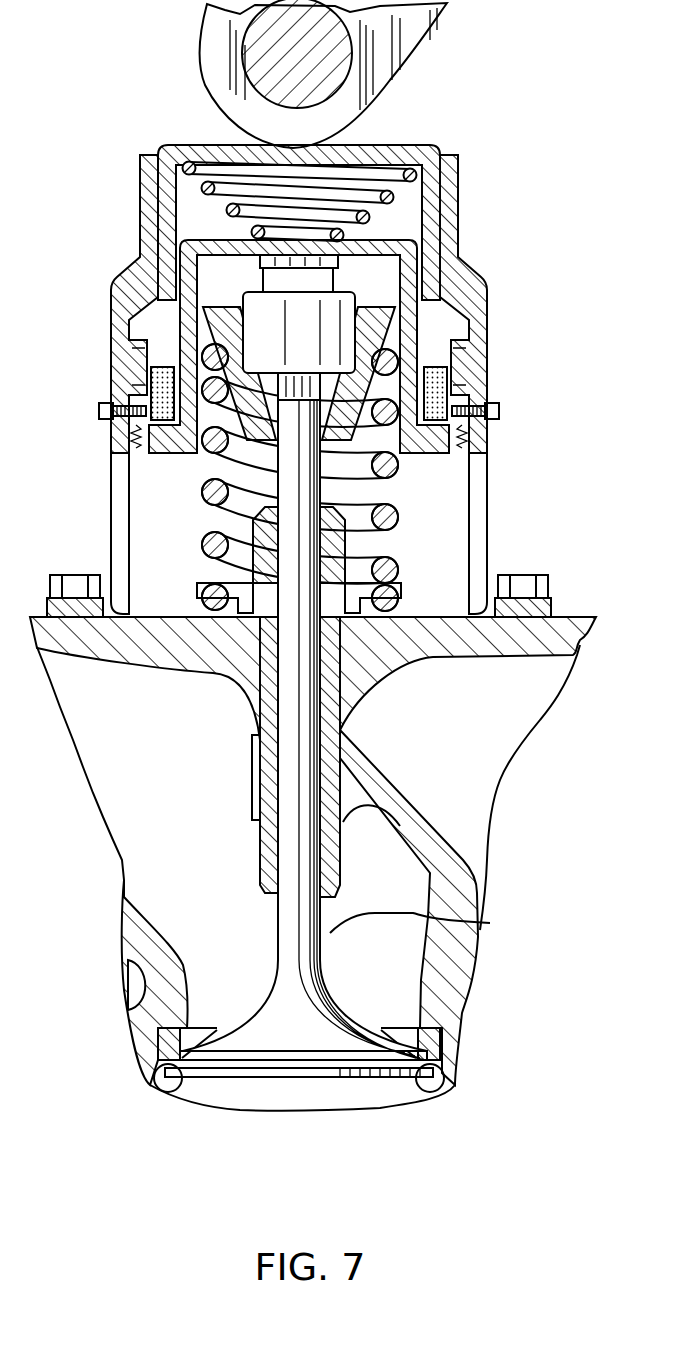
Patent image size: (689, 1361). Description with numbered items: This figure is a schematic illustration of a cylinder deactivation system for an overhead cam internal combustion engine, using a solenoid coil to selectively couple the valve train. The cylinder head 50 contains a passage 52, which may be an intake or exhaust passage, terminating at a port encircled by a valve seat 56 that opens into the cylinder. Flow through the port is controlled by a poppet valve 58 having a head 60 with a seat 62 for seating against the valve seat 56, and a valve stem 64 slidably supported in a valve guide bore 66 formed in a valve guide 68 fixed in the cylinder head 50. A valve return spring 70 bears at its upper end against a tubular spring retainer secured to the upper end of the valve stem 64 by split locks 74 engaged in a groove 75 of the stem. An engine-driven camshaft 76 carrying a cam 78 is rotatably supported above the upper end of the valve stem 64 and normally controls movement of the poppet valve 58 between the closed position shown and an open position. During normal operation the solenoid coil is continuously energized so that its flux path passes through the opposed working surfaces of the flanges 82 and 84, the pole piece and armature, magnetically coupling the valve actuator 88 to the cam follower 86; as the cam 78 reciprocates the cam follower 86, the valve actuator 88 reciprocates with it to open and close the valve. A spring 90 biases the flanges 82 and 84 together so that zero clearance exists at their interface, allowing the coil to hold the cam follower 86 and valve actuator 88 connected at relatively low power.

The cylinder head 50 is at (104, 404).
The passage 52 is at (167, 852).
The valve seat 56 is at (172, 1087).
The poppet valve 58 is at (467, 923).
The head 60 is at (357, 1080).
The seat 62 is at (273, 1062).
The valve stem 64 is at (287, 710).
The valve guide bore 66 is at (290, 773).
The valve guide 68 is at (373, 737).
The valve return spring 70 is at (398, 568).
The split locks 74 is at (397, 455).
The groove 75 is at (270, 443).
The camshaft 76 is at (250, 80).
The cam 78 is at (440, 45).
The flange 82 is at (140, 456).
The flange 84 is at (165, 456).
The cam follower 86 is at (440, 152).
The valve actuator 88 is at (198, 228).
The spring 90 is at (152, 155).